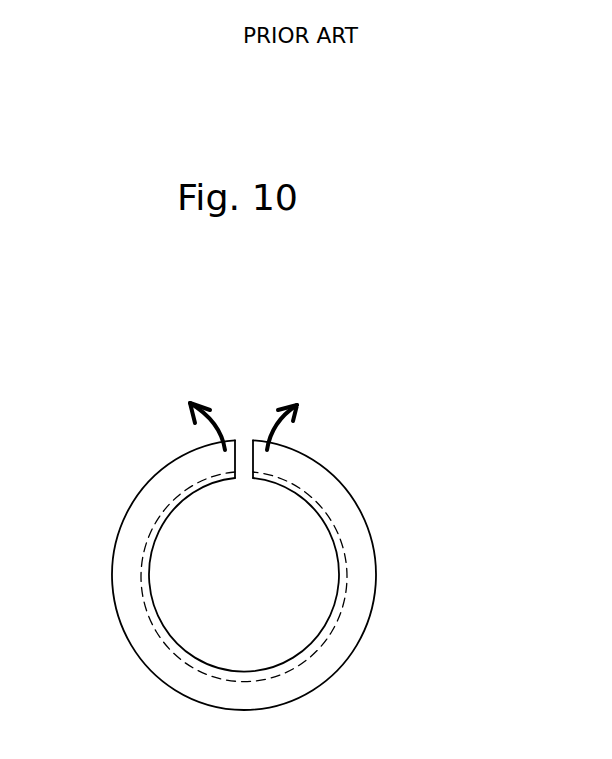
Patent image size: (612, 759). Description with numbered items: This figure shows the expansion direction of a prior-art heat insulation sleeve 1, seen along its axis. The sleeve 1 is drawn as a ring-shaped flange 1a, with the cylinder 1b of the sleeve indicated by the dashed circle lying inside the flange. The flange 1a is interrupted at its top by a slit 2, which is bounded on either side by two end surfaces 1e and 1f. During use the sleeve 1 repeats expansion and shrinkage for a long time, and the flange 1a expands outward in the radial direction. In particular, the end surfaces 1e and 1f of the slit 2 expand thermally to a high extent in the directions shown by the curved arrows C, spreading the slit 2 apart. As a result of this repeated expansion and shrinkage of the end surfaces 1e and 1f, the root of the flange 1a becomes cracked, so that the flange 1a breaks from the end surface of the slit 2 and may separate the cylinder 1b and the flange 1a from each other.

The heat insulation sleeve 1 is at (270, 547).
The flange 1a is at (340, 653).
The cylinder 1b is at (232, 676).
The end surface of the slit 1e is at (258, 449).
The end surface of the slit 1f is at (228, 453).
The slit 2 is at (243, 447).
The expansion direction arrows C is at (198, 438).